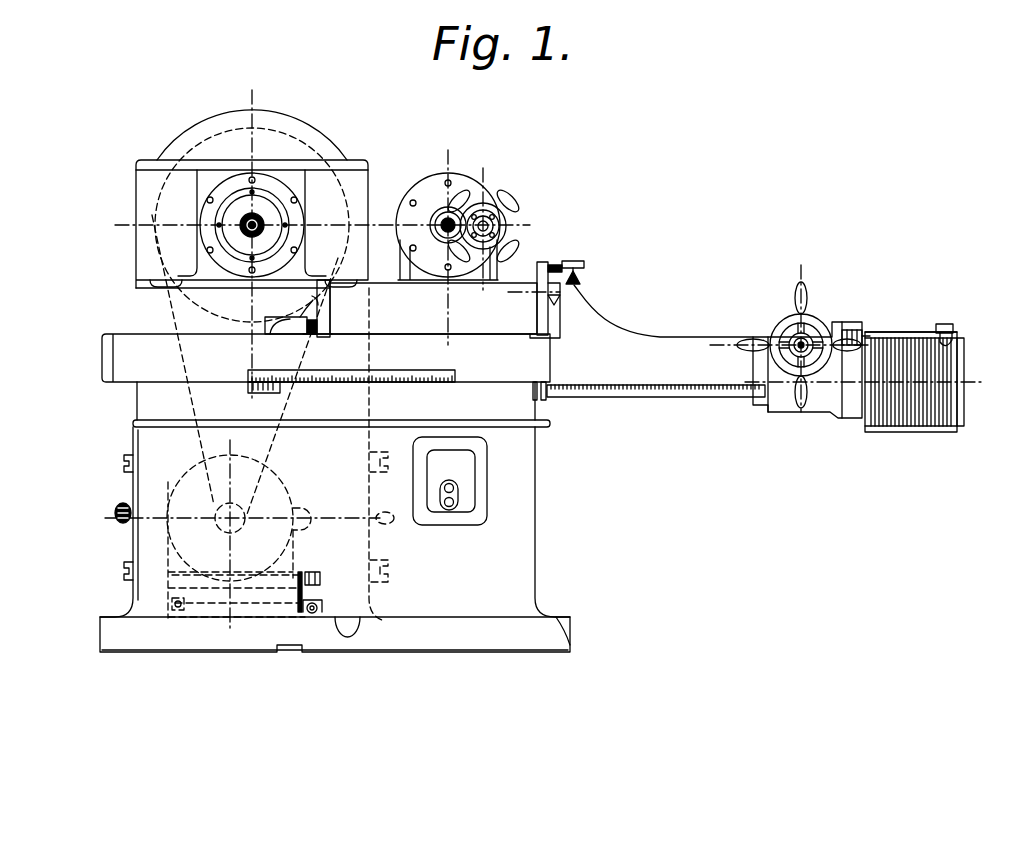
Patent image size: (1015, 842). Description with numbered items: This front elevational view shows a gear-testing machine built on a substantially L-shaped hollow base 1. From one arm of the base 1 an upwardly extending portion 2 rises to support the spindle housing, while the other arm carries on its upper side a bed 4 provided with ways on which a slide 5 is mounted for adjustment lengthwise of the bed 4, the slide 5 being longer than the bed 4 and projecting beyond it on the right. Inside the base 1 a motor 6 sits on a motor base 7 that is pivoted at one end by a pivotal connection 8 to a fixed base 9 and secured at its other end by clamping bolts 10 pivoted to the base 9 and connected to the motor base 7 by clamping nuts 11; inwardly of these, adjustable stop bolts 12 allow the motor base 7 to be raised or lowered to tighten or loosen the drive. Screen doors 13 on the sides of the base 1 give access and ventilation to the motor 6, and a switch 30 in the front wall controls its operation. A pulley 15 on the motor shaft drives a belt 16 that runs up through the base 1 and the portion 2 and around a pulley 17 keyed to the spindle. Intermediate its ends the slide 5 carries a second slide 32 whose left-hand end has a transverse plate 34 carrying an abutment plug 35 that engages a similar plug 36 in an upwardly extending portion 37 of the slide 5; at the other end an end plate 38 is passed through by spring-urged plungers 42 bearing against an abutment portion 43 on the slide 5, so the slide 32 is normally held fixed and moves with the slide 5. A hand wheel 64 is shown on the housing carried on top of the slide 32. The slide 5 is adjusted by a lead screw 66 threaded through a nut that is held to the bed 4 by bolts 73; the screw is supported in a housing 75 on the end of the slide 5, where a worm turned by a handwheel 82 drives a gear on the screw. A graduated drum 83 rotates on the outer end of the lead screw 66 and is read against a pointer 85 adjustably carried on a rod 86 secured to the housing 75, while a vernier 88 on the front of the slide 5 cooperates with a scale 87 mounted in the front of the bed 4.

The base 1 is at (528, 497).
The portion 2 is at (352, 182).
The bed 4 is at (136, 399).
The slide 5 is at (615, 323).
The motor 6 is at (287, 489).
The motor base 7 is at (243, 588).
The pivotal connection 8 is at (172, 603).
The fixed base 9 is at (237, 620).
The clamping bolts 10 is at (318, 597).
The clamping nuts 11 is at (320, 579).
The stop bolts 12 is at (299, 571).
The screen doors 13 is at (377, 548).
The pulley 15 is at (235, 503).
The belt 16 is at (290, 407).
The pulley 17 is at (283, 135).
The switch 30 is at (470, 470).
The slide 32 is at (498, 322).
The plate 34 is at (330, 310).
The abutment plug 35 is at (322, 338).
The plug 36 is at (312, 297).
The upwardly extending portion 37 is at (293, 328).
The end plate 38 is at (538, 268).
The plungers 42 is at (558, 302).
The abutment portion 43 is at (583, 277).
The hand wheel 64 is at (492, 200).
The lead screw 66 is at (695, 393).
The bolts 73 is at (130, 533).
The housing 75 is at (788, 395).
The handwheel 82 is at (805, 318).
The drum 83 is at (943, 432).
The pointer 85 is at (950, 328).
The rod 86 is at (885, 332).
The scale 87 is at (396, 382).
The vernier 88 is at (258, 393).